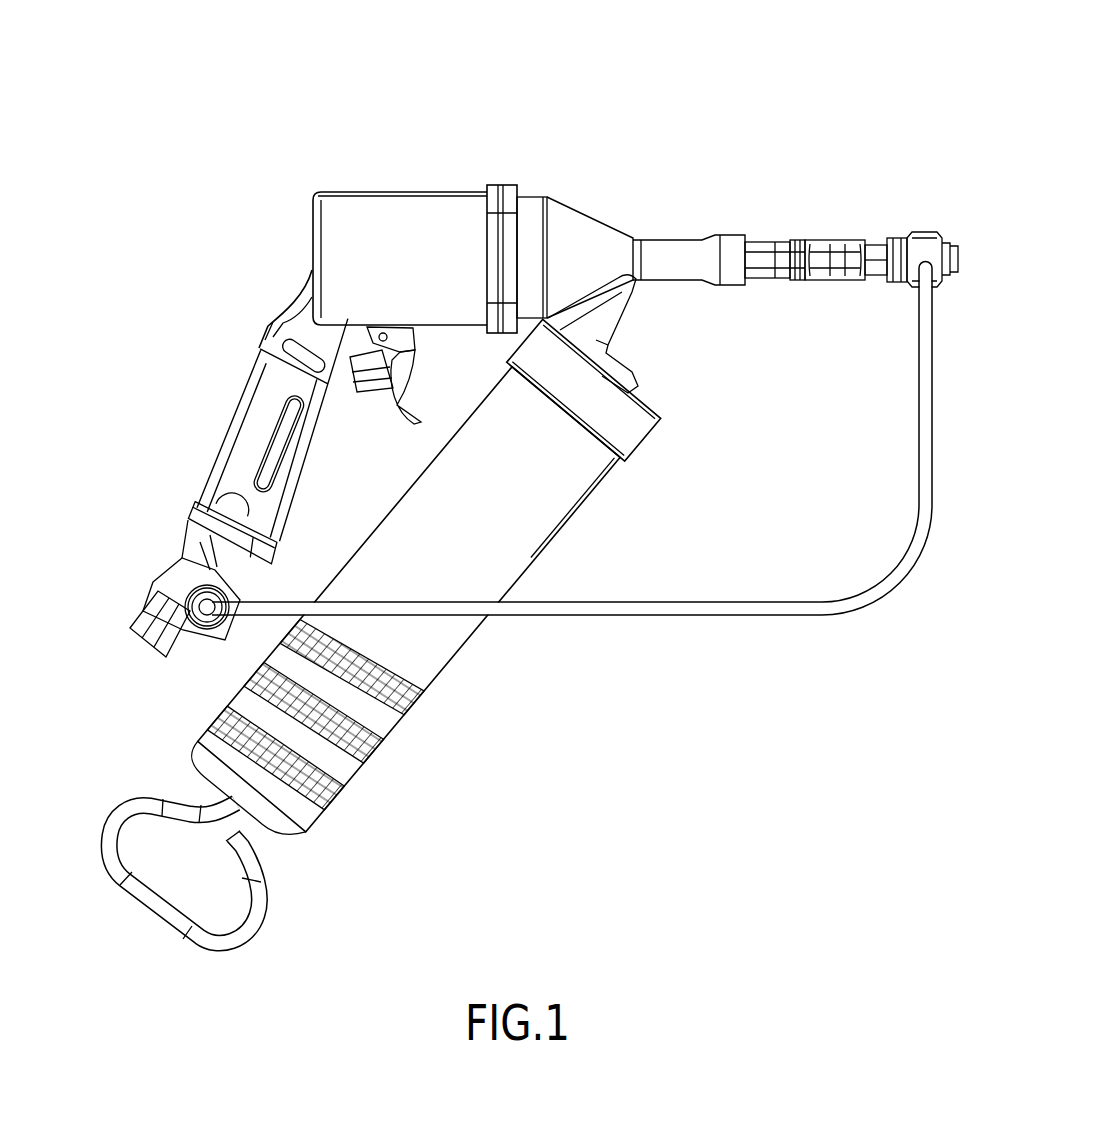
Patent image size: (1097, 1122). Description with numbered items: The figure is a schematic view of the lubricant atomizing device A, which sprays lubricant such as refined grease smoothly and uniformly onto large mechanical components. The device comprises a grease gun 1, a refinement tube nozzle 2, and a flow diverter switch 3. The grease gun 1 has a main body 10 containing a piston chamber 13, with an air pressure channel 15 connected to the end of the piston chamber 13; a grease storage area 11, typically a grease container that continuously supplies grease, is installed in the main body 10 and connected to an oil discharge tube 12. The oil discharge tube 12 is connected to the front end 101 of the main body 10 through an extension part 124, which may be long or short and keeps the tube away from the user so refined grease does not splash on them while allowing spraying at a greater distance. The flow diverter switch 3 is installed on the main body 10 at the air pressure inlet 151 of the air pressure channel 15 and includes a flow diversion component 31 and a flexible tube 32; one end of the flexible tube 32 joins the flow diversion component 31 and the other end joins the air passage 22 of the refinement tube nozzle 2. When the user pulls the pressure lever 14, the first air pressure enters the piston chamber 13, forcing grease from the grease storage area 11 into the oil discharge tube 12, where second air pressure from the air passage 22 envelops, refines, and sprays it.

The lubricant atomizing device A is at (231, 88).
The grease gun 1 is at (262, 270).
The main body 10 is at (375, 190).
The piston chamber 13 is at (433, 283).
The grease storage area 11 is at (478, 553).
The oil discharge tube 12 is at (848, 258).
The extension part 124 is at (782, 250).
The front end 101 is at (760, 270).
The pressure lever 14 is at (400, 407).
The air pressure channel 15 is at (245, 402).
The air pressure inlet 151 is at (190, 552).
The refinement tube nozzle 2 is at (906, 228).
The air passage 22 is at (928, 250).
The flow diverter switch 3 is at (143, 722).
The flow diversion component 31 is at (157, 586).
The flexible tube 32 is at (262, 614).